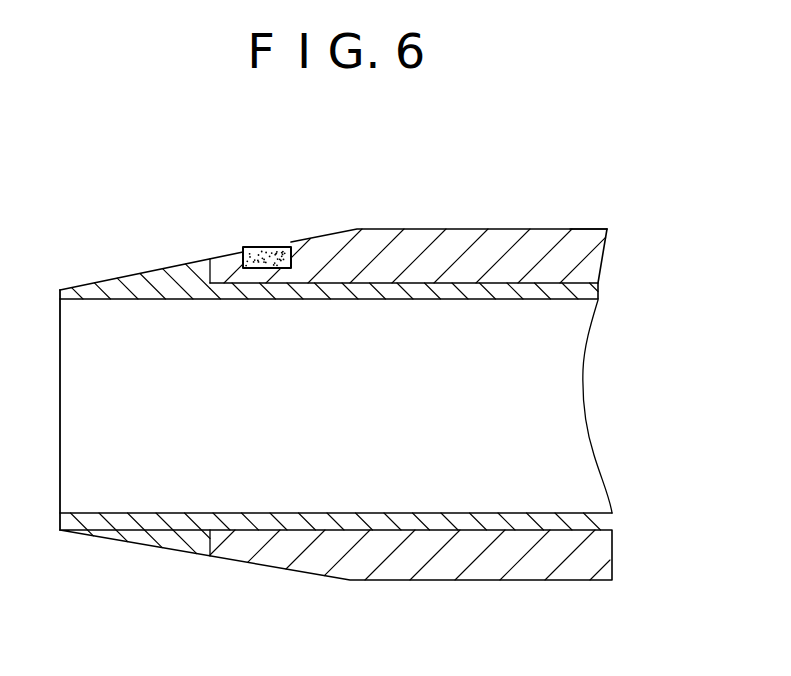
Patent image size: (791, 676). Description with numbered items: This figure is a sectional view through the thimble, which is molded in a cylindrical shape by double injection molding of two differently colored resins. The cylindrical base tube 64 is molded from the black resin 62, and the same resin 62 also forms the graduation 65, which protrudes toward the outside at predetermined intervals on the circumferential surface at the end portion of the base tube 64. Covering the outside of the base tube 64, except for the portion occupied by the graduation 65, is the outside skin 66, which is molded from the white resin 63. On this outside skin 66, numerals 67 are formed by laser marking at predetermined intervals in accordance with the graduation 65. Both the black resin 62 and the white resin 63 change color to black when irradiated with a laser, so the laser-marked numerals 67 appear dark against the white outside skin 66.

The resin 62 is at (598, 288).
The resin 63 is at (593, 232).
The base tube 64 is at (335, 299).
The graduation 65 is at (153, 273).
The outside skin 66 is at (463, 235).
The numerals 67 is at (268, 247).